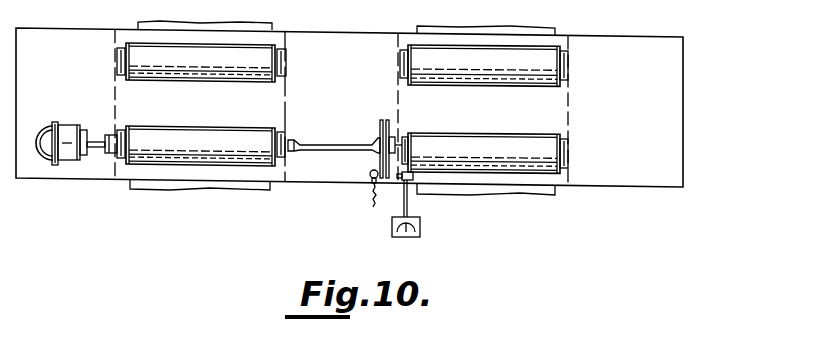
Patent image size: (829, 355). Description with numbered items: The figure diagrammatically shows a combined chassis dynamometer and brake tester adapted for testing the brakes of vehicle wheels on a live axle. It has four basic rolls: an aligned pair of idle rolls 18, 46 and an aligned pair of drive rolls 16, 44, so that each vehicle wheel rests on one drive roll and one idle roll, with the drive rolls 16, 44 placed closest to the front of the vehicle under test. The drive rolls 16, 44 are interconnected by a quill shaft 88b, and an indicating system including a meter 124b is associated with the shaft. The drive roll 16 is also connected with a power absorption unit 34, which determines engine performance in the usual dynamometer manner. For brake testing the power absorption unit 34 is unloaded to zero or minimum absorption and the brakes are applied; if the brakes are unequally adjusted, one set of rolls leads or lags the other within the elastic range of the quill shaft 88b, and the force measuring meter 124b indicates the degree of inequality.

The drive roll 16 is at (226, 135).
The idle roll 18 is at (176, 72).
The power absorption unit 34 is at (65, 160).
The drive roll 44 is at (512, 140).
The idle roll 46 is at (462, 77).
The quill shaft 88b is at (323, 147).
The meter 124b is at (420, 228).